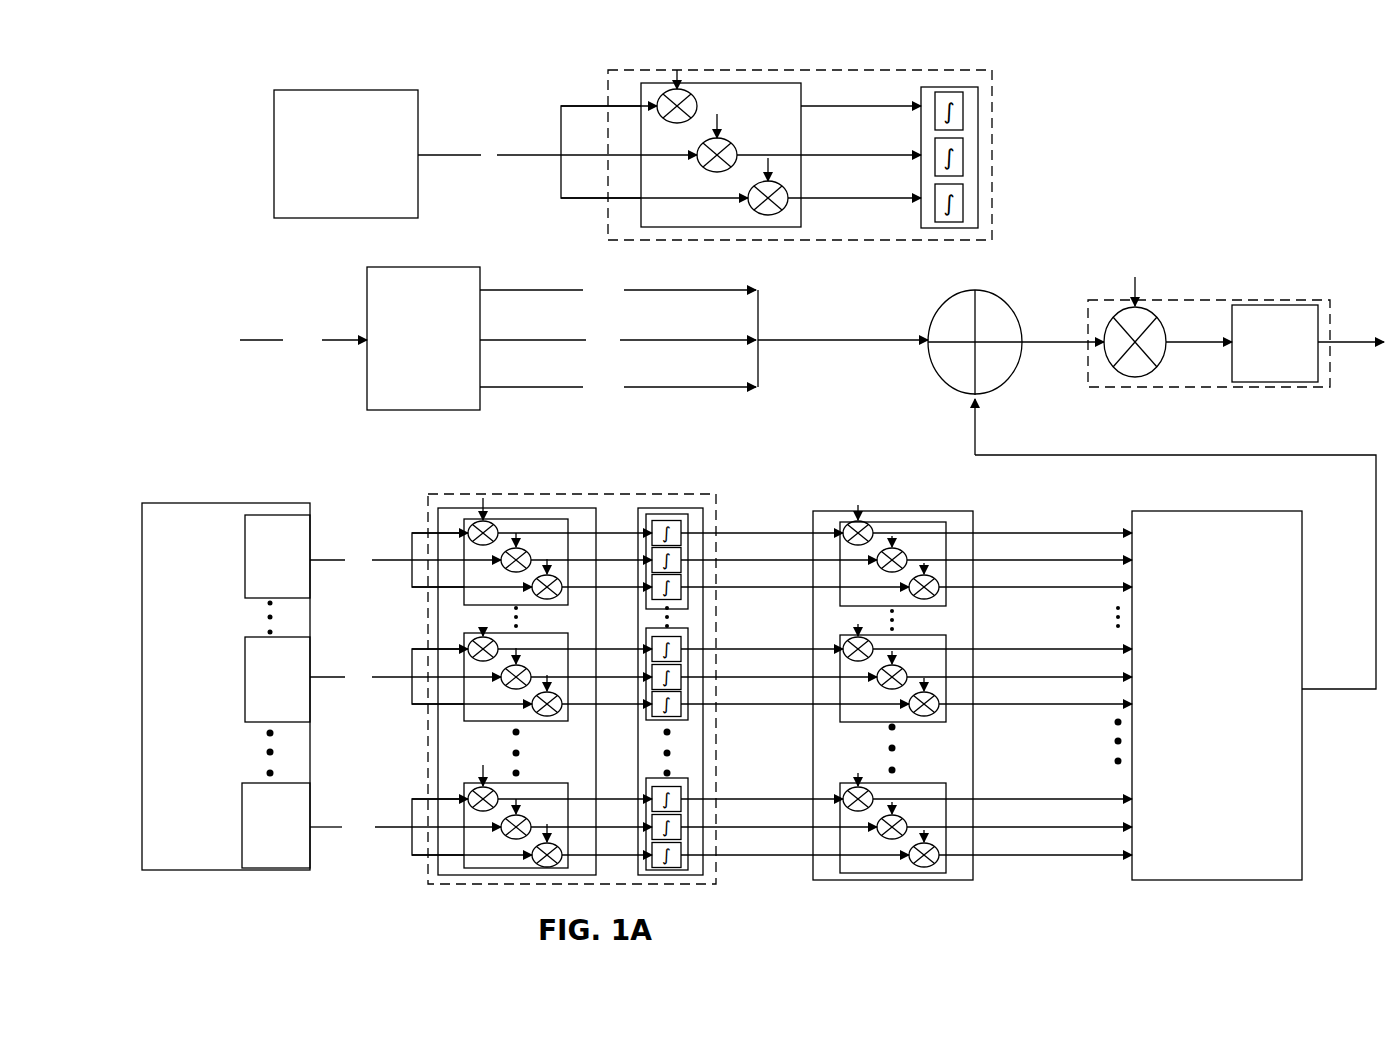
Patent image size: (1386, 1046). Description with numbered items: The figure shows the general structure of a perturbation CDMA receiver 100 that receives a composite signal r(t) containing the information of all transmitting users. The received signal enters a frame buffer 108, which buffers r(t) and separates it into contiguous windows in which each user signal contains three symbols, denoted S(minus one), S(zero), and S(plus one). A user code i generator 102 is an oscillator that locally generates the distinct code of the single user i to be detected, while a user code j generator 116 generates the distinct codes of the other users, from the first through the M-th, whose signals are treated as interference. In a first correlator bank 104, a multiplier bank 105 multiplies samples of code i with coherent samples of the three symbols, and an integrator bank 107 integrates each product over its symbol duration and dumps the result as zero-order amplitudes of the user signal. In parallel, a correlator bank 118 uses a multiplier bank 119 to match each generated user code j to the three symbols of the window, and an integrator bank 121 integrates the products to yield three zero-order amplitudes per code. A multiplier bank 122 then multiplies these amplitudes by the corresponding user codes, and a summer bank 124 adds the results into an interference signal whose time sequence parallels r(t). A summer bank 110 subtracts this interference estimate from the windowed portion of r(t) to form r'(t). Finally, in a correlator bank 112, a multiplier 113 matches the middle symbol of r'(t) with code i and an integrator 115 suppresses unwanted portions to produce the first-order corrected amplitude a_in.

The perturbation CDMA receiver 100 is at (1131, 136).
The user code i generator 102 is at (345, 88).
The correlator bank 104 is at (608, 90).
The multiplier bank 105 is at (747, 83).
The integrator bank 107 is at (953, 86).
The received signal frame buffer 108 is at (423, 266).
The summer bank 110 is at (960, 291).
The correlator bank 112 is at (1100, 298).
The multiplier 113 is at (1152, 310).
The integrator 115 is at (1270, 303).
The user code j generator 116 is at (226, 503).
The correlator bank 118 is at (440, 493).
The multiplier bank 119 is at (564, 508).
The integrator bank 121 is at (678, 508).
The multiplier bank 122 is at (920, 511).
The summer bank 124 is at (1204, 510).